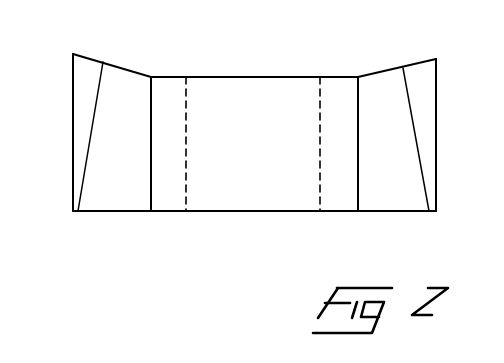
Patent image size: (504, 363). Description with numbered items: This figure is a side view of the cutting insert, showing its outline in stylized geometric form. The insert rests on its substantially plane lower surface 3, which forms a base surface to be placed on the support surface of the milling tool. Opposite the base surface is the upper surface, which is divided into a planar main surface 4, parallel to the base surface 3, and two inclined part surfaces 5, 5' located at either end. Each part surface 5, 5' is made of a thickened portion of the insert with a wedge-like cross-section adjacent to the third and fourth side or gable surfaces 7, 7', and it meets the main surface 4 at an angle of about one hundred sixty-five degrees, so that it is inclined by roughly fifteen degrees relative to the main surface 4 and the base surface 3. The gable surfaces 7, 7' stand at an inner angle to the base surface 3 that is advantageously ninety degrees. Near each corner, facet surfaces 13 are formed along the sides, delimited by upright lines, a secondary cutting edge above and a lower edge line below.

The lower surface 3 is at (230, 212).
The main surface 4 is at (259, 76).
The part surface 5 is at (112, 46).
The part surface 5' is at (397, 50).
The third side surface 7 is at (47, 132).
The fourth side surface 7' is at (463, 135).
The facet surface 13 is at (128, 144).